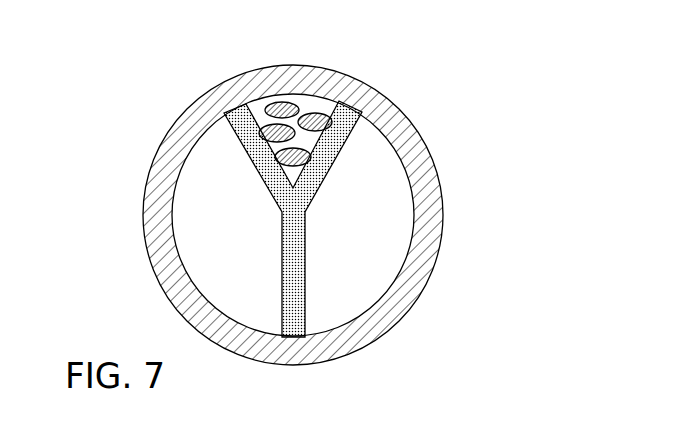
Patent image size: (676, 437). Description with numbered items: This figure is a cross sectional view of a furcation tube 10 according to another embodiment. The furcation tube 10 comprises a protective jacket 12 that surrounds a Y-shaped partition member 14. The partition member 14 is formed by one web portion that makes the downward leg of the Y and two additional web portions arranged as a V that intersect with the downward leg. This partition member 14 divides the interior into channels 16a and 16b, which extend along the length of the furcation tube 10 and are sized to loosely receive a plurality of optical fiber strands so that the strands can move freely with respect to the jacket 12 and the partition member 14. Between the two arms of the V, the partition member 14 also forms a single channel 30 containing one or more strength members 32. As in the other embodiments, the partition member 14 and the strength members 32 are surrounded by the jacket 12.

The furcation tube 10 is at (449, 287).
The protective jacket 12 is at (408, 122).
The partition member 14 is at (305, 303).
The channel 16a is at (193, 212).
The channel 16b is at (385, 199).
The single channel 30 is at (312, 103).
The strength members 32 is at (285, 102).